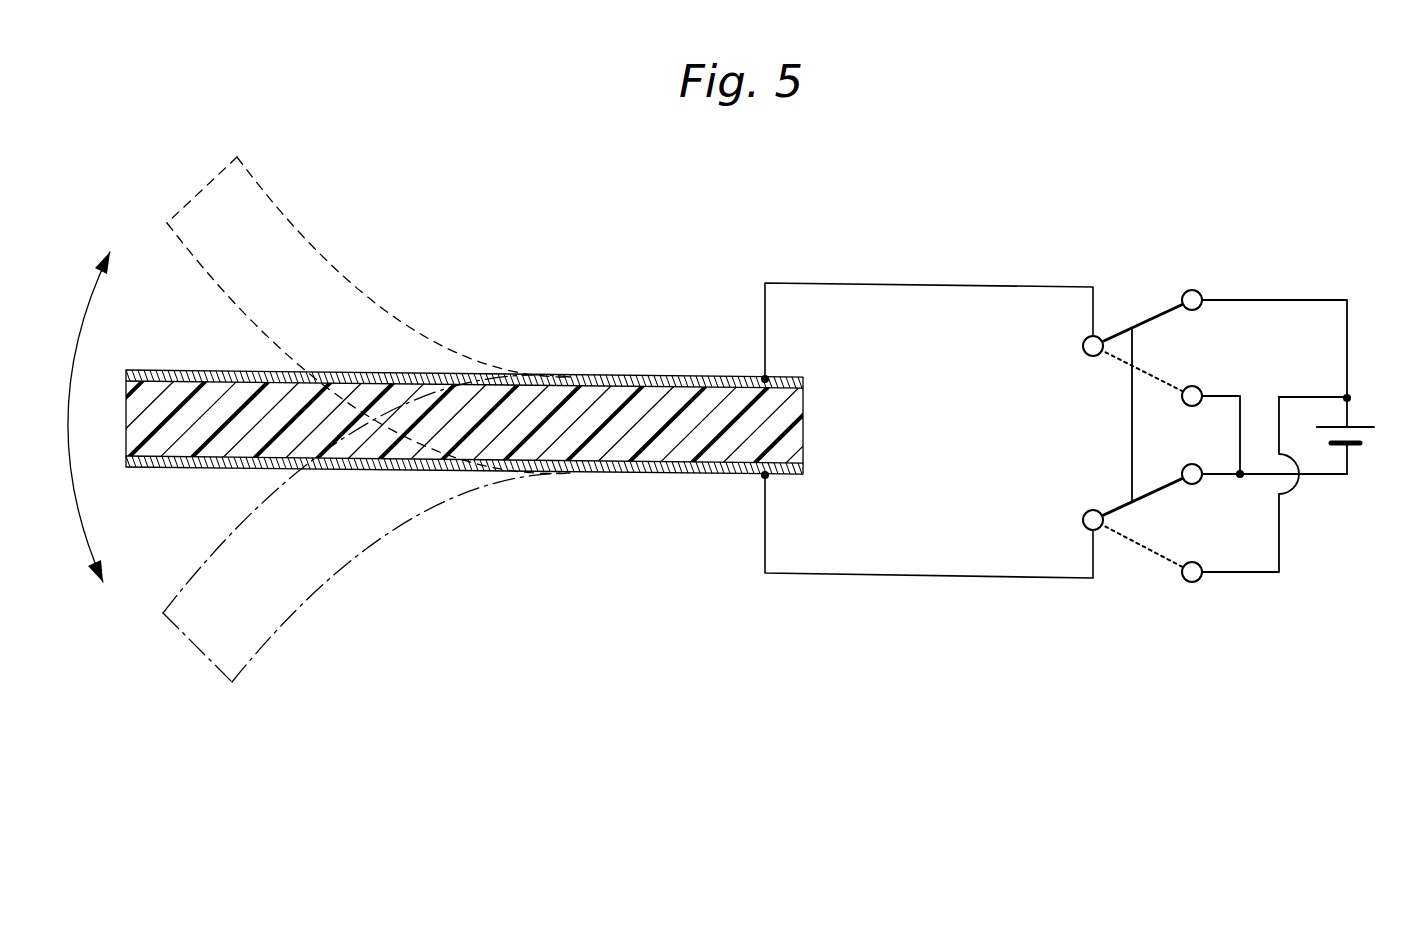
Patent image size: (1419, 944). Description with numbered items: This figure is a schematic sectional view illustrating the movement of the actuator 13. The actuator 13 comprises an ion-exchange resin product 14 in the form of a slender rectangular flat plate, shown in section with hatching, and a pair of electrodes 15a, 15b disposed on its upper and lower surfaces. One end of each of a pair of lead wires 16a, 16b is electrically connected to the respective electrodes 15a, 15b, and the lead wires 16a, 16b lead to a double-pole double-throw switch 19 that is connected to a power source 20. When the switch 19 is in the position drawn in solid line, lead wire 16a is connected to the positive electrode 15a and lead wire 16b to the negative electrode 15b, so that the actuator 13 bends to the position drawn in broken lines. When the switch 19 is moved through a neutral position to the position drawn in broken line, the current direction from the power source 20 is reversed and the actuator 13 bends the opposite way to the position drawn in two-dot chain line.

The actuator 13 is at (628, 355).
The ion-exchange resin product 14 is at (160, 398).
The electrode 15a is at (433, 375).
The electrode 15b is at (607, 475).
The lead wire 16a is at (923, 283).
The lead wire 16b is at (925, 578).
The double-pole double-throw switch 19 is at (1102, 423).
The power source 20 is at (1355, 447).